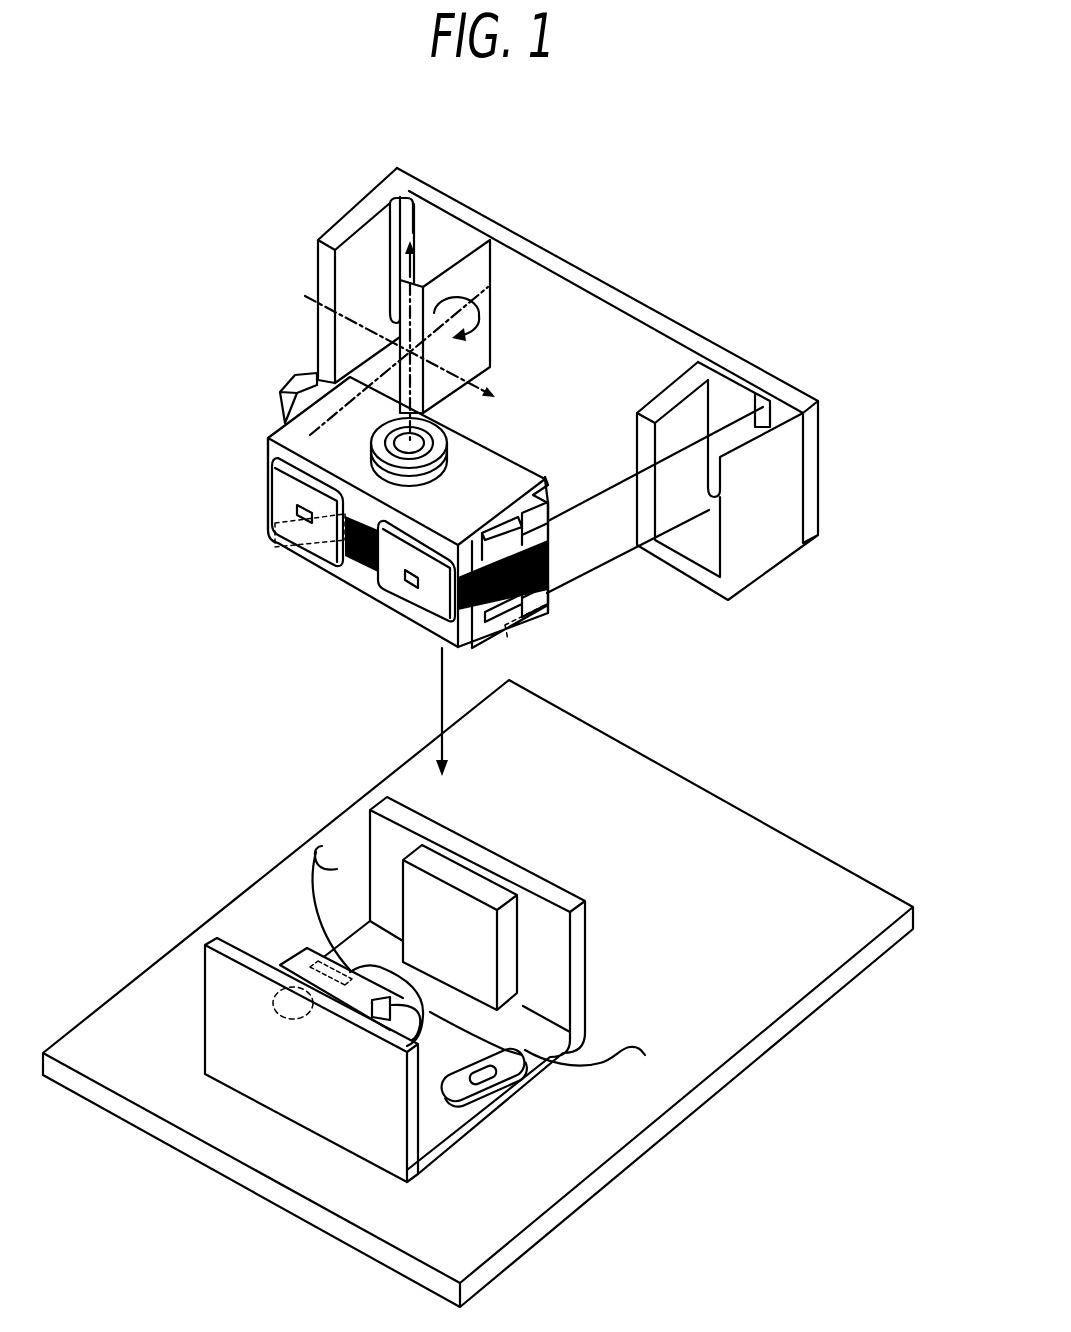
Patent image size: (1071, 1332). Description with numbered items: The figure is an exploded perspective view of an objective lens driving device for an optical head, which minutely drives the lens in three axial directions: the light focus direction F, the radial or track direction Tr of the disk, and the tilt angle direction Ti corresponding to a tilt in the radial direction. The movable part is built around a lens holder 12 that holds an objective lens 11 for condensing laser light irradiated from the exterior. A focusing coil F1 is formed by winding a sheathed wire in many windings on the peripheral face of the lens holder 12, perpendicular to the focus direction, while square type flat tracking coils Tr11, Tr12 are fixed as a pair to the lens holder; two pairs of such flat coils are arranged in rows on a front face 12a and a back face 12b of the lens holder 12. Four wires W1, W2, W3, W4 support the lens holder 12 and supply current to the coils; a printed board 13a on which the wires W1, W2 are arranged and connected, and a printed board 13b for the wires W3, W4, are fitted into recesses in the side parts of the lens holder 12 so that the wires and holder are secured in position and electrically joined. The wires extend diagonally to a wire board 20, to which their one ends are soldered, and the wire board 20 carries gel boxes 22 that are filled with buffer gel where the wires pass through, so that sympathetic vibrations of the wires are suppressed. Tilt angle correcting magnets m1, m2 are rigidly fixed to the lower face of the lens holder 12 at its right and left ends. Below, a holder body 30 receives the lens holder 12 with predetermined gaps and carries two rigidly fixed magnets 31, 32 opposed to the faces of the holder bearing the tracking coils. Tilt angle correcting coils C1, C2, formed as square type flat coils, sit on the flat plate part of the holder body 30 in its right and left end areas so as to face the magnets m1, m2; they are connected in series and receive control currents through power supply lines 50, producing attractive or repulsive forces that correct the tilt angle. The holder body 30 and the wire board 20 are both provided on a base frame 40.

The wire board 20 is at (524, 242).
The gel box 22 is at (333, 228).
The lens holder 12 is at (267, 438).
The front face 12a is at (261, 457).
The back face 12b is at (549, 465).
The printed board 13a is at (502, 537).
The printed board 13b is at (278, 396).
The objective lens 11 is at (434, 458).
The wire W1 is at (577, 508).
The wire W2 is at (588, 588).
The wire W3 is at (366, 302).
The wire W4 is at (397, 378).
The light focus direction F is at (419, 336).
The tilt angle direction Ti is at (399, 351).
The radial direction (track direction) Tr is at (415, 356).
The focusing coil F1 is at (352, 556).
The tracking coil Tr11 is at (278, 546).
The tracking coil Tr12 is at (407, 598).
The tilt angle correcting magnet m1 is at (505, 625).
The tilt angle correcting magnet m2 is at (270, 536).
The holder body 30 is at (586, 948).
The magnet 31 is at (353, 1006).
The magnet 32 is at (463, 873).
The base frame 40 is at (818, 868).
The power supply line 50 is at (292, 845).
The tilt angle correcting coil C1 is at (492, 1087).
The tilt angle correcting coil C2 is at (350, 970).